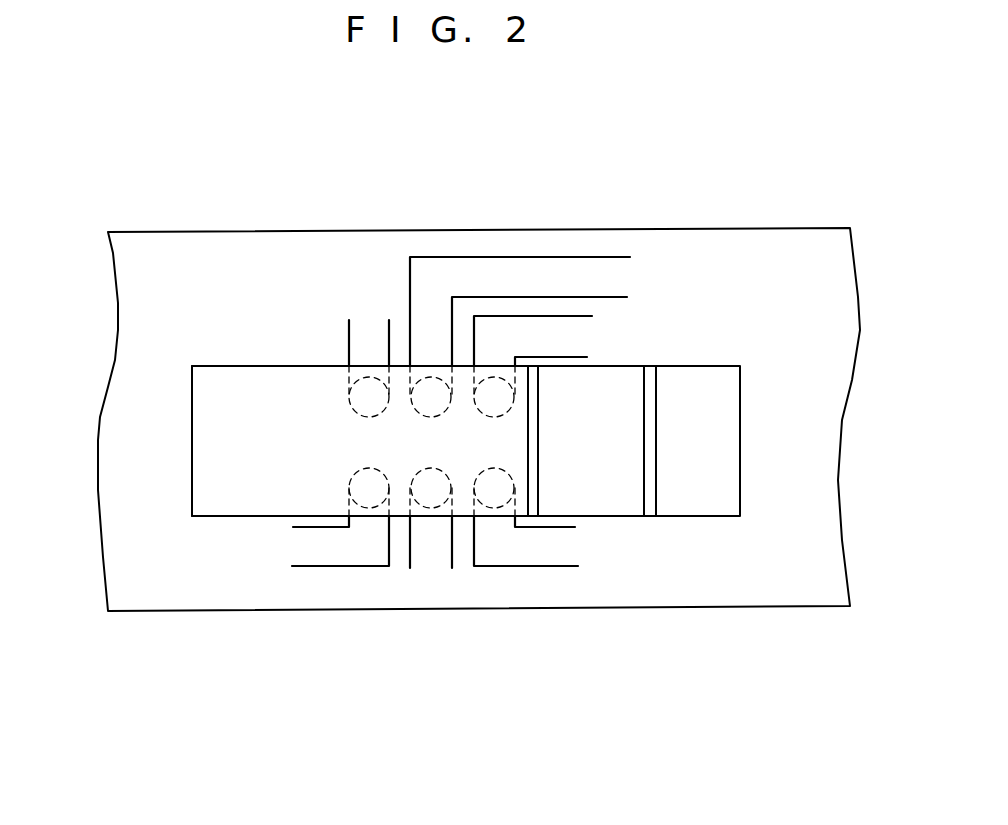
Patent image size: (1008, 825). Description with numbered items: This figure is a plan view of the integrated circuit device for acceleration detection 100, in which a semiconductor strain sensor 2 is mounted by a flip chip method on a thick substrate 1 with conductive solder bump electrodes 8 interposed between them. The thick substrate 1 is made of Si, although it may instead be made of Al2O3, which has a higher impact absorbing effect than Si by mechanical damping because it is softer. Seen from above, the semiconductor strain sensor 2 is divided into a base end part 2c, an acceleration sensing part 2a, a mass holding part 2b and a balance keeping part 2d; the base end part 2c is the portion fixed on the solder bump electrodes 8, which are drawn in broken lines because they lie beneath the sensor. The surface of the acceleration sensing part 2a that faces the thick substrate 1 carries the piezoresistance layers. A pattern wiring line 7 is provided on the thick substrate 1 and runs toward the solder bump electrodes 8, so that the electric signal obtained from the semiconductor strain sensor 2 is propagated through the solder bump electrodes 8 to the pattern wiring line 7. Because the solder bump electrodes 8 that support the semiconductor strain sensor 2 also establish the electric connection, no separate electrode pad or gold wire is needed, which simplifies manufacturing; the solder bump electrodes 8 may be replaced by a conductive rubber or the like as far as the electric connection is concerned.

The integrated circuit device for acceleration detection 100 is at (165, 632).
The thick substrate 1 is at (754, 277).
The semiconductor strain sensor 2 is at (391, 532).
The acceleration sensing part 2a is at (599, 499).
The mass holding part 2b is at (703, 499).
The base end part 2c is at (402, 502).
The balance keeping part 2d is at (247, 503).
The pattern wiring line 7 is at (433, 278).
The solder bump electrode 8 is at (353, 405).